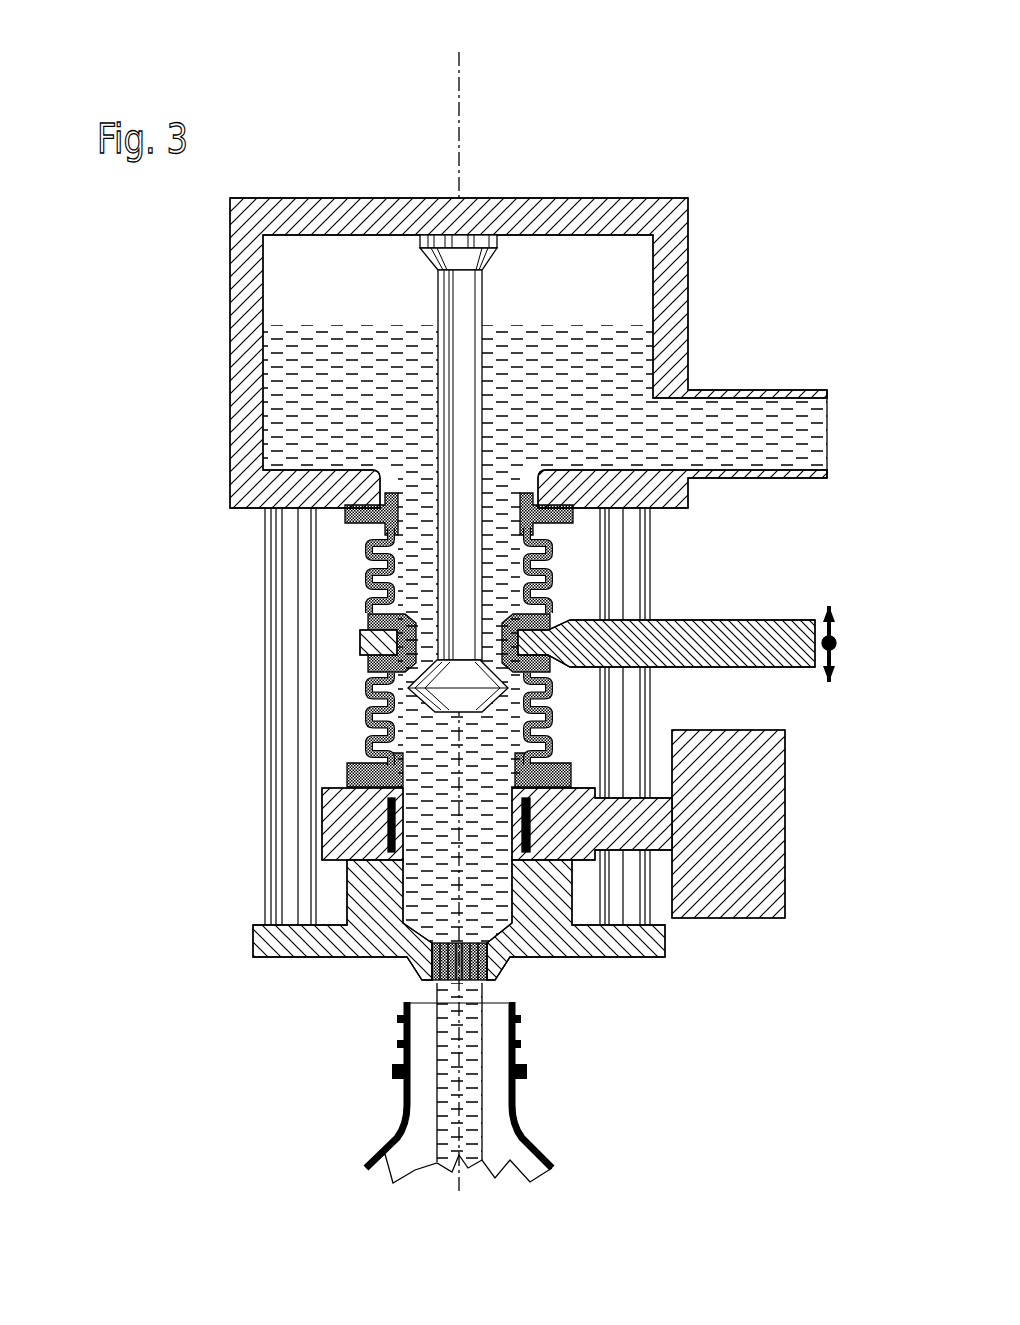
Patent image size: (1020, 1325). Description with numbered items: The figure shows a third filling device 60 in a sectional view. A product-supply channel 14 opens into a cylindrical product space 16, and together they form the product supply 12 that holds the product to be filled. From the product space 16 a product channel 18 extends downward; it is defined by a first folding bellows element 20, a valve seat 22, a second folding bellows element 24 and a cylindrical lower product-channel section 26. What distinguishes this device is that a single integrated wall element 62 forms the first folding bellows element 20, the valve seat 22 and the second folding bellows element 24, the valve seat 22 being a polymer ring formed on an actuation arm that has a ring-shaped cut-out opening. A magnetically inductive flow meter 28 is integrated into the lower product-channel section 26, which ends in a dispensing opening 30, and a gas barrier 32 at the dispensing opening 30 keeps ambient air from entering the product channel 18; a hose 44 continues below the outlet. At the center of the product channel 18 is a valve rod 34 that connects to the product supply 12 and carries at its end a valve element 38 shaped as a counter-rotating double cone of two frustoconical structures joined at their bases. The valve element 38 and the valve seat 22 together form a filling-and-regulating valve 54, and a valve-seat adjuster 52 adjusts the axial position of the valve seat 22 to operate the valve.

The product supply 12 is at (733, 250).
The product-supply channel 14 is at (748, 408).
The product space 16 is at (586, 263).
The product channel 18 is at (618, 700).
The first folding bellows element 20 is at (365, 547).
The valve seat 22 is at (362, 637).
The second folding bellows element 24 is at (365, 705).
The lower product-channel section 26 is at (588, 887).
The magnetically inductive flow meter 28 is at (740, 820).
The dispensing opening 30 is at (417, 992).
The gas barrier 32 is at (495, 970).
The valve rod 34 is at (458, 433).
The valve element 38 is at (473, 672).
The outlet hose 44 is at (520, 1145).
The valve-seat adjuster 52 is at (835, 635).
The filling-and-regulating valve 54 is at (575, 680).
The third filling device 60 is at (328, 135).
The integrated wall element 62 is at (308, 592).